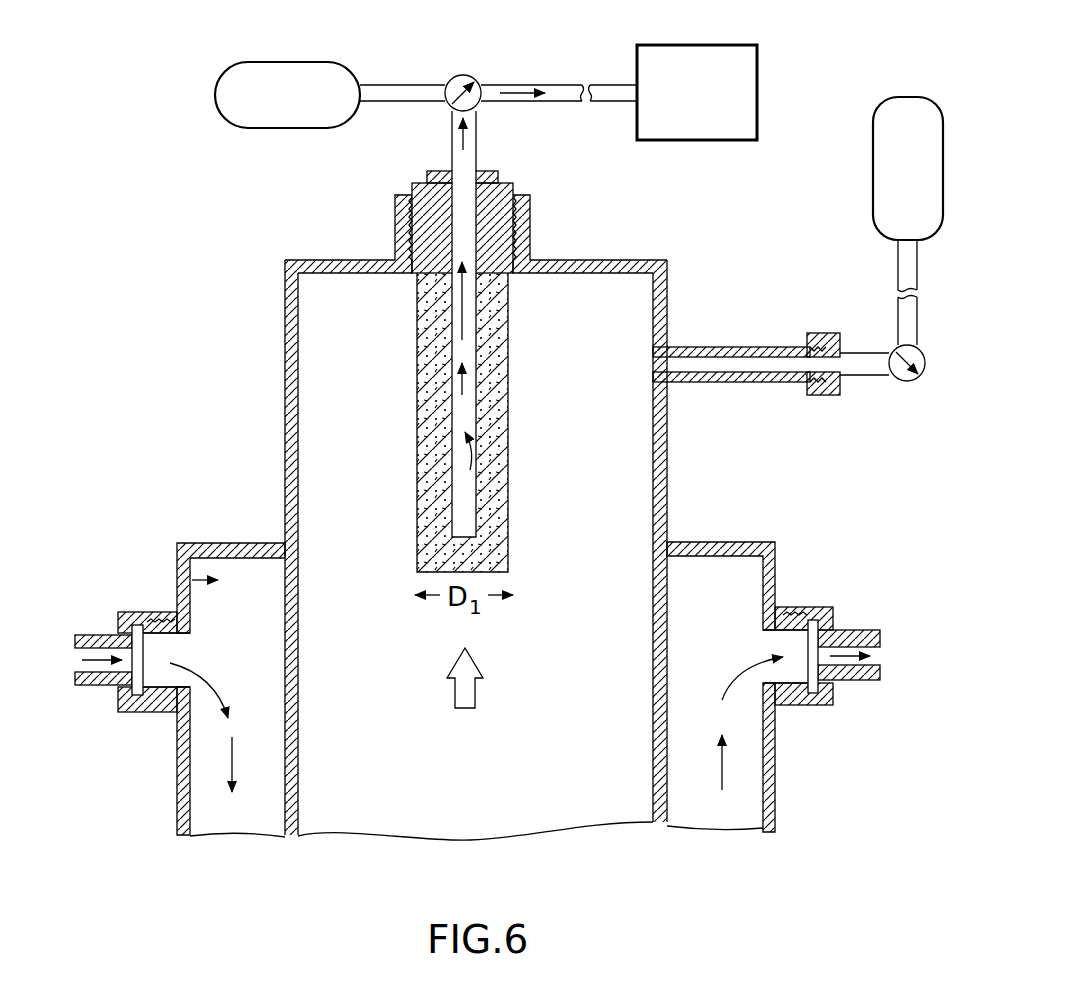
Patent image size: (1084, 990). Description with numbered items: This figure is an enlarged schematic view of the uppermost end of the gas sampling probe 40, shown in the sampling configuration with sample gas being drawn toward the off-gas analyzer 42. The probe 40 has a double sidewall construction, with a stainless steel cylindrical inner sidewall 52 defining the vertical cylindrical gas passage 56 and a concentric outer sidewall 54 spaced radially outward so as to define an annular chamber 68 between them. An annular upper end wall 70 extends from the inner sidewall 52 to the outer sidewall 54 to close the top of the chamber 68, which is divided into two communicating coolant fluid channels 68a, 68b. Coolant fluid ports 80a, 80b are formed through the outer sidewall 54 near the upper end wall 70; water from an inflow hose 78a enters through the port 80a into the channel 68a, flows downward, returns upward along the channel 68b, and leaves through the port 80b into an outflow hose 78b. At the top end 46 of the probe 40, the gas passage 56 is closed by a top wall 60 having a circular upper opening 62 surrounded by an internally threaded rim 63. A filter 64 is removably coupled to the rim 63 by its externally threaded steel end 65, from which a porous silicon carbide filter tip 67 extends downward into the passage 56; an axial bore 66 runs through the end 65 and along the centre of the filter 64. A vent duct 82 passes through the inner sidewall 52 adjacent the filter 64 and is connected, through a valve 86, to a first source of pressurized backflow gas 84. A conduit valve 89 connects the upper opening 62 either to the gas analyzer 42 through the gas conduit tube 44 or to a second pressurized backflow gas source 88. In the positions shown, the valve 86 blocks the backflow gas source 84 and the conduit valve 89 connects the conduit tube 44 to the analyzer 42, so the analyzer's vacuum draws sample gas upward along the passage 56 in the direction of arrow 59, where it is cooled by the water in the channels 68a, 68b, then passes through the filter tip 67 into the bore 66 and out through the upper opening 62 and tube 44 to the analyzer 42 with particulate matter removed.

The gas sampling probe 40 is at (238, 355).
The off-gas analyzer 42 is at (697, 92).
The gas conduit tube 44 is at (555, 86).
The top end 46 is at (613, 257).
The inner sidewall 52 is at (283, 405).
The outer sidewall 54 is at (178, 800).
The gas passage 56 is at (458, 785).
The arrow 59 is at (475, 693).
The top wall 60 is at (345, 260).
The upper opening 62 is at (410, 277).
The internally threaded rim 63 is at (530, 216).
The filter 64 is at (504, 417).
The externally threaded steel end 65 is at (500, 178).
The bore 66 is at (475, 318).
The filter tip 67 is at (497, 360).
The annular chamber 68 is at (190, 578).
The coolant fluid channel 68a is at (213, 620).
The coolant fluid channel 68b is at (688, 620).
The upper end wall 70 is at (232, 545).
The inflow hose 78a is at (108, 633).
The outflow hose 78b is at (850, 630).
The coolant fluid port 80a is at (135, 690).
The coolant fluid port 80b is at (828, 692).
The vent duct 82 is at (718, 362).
The first source of pressurized backflow gas 84 is at (891, 185).
The valve 86 is at (906, 382).
The second pressurized backflow gas source 88 is at (270, 110).
The conduit valve 89 is at (458, 76).